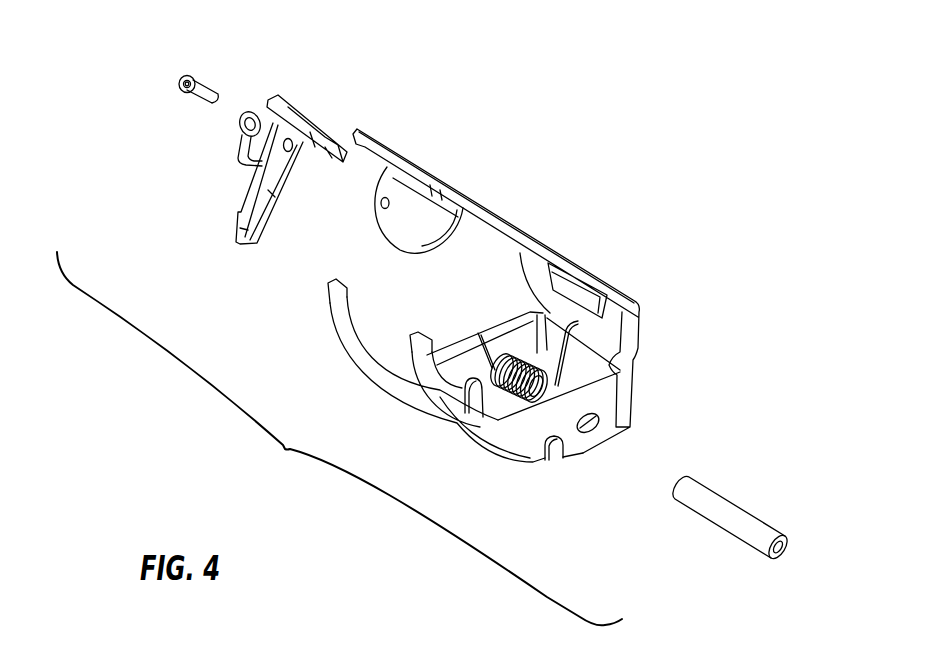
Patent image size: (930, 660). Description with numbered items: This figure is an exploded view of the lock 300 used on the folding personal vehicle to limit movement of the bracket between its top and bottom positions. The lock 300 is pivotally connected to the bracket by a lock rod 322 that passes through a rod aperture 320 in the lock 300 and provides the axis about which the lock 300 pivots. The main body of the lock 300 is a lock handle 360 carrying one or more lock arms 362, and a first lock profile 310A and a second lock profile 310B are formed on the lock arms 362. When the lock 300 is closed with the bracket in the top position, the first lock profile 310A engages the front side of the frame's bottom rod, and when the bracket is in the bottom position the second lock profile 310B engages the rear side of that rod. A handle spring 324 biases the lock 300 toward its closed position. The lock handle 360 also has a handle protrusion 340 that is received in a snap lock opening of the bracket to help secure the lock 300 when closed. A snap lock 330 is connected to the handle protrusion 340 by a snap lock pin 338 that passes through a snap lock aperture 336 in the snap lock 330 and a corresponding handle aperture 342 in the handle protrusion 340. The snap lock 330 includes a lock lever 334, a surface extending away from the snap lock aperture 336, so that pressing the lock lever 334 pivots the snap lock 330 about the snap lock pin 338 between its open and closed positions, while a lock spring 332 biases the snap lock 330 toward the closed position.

The lock 300 is at (339, 438).
The first lock profile 310A is at (473, 383).
The second lock profile 310B is at (333, 305).
The rod aperture 320 is at (592, 429).
The lock rod 322 is at (753, 520).
The handle spring 324 is at (533, 368).
The snap lock 330 is at (257, 203).
The lock spring 332 is at (253, 112).
The lock lever 334 is at (293, 107).
The snap lock aperture 336 is at (278, 144).
The snap lock pin 338 is at (181, 91).
The handle protrusion 340 is at (400, 230).
The handle aperture 342 is at (383, 199).
The lock handle 360 is at (620, 337).
The lock arm 362 is at (340, 358).